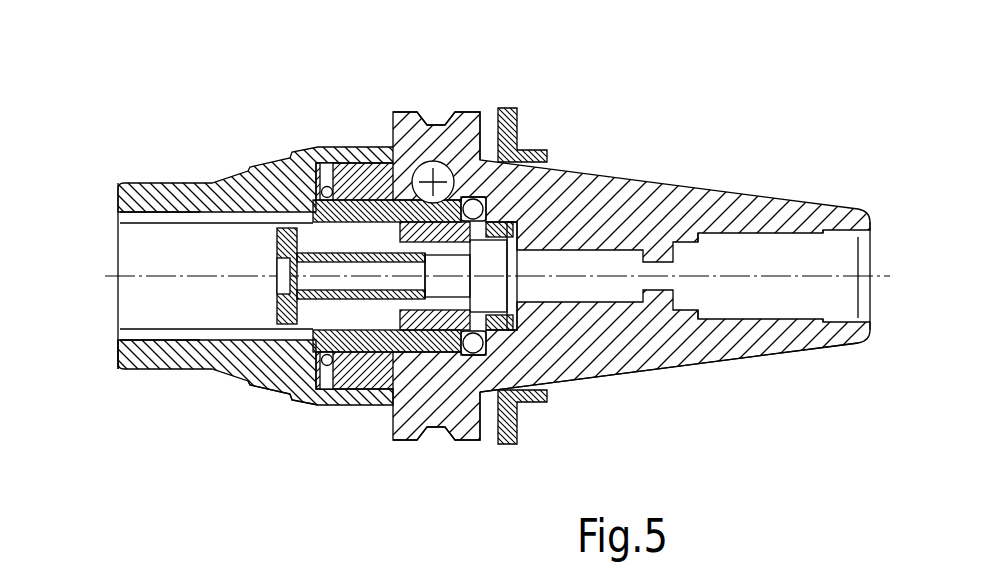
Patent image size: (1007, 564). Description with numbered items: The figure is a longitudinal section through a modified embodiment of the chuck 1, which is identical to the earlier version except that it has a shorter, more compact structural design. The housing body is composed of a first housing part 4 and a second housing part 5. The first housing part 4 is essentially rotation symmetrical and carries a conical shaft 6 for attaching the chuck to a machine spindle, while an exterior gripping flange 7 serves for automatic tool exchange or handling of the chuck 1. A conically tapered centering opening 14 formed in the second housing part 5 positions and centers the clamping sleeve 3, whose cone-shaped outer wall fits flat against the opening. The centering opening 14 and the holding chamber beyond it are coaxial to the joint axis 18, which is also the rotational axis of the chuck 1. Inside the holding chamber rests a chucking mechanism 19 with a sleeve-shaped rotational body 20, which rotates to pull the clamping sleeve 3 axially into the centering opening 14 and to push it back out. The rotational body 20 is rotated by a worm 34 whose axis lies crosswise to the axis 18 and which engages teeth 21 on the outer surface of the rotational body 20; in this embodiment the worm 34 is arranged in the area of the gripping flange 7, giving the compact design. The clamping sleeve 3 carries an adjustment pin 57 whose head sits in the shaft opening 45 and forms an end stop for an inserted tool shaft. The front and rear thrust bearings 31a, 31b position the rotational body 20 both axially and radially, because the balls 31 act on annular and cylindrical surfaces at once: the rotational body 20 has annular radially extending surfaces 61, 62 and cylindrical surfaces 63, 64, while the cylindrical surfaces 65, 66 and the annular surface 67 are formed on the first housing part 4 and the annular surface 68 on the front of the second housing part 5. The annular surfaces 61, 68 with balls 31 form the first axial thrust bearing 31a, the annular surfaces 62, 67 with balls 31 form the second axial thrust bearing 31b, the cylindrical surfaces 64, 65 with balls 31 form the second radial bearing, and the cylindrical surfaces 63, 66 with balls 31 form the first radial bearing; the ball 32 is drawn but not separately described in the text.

The chuck 1 is at (673, 118).
The clamping sleeve 3 is at (140, 330).
The first housing part 4 is at (600, 190).
The second housing part 5 is at (218, 182).
The conical shaft 6 is at (755, 343).
The gripping flange 7 is at (453, 98).
The centering opening 14 is at (113, 346).
The axis 18 is at (845, 277).
The chucking mechanism 19 is at (390, 405).
The rotational body 20 is at (408, 358).
The teeth 21 is at (400, 315).
The balls 31 is at (512, 150).
The first axial thrust bearing 31a is at (300, 393).
The second axial thrust bearing 31b is at (503, 394).
The ball 32 is at (565, 195).
The worm 34 is at (407, 173).
The shaft opening 45 is at (166, 254).
The adjustment pin 57 is at (275, 390).
The annular radially extending surface 61 is at (347, 180).
The annular radially extending surface 62 is at (438, 332).
The cylindrical surface 63 is at (320, 215).
The cylindrical surface 64 is at (518, 260).
The cylindrical surface 65 is at (477, 352).
The cylindrical surface 66 is at (332, 368).
The annular surface 67 is at (490, 335).
The annular surface 68 is at (292, 160).